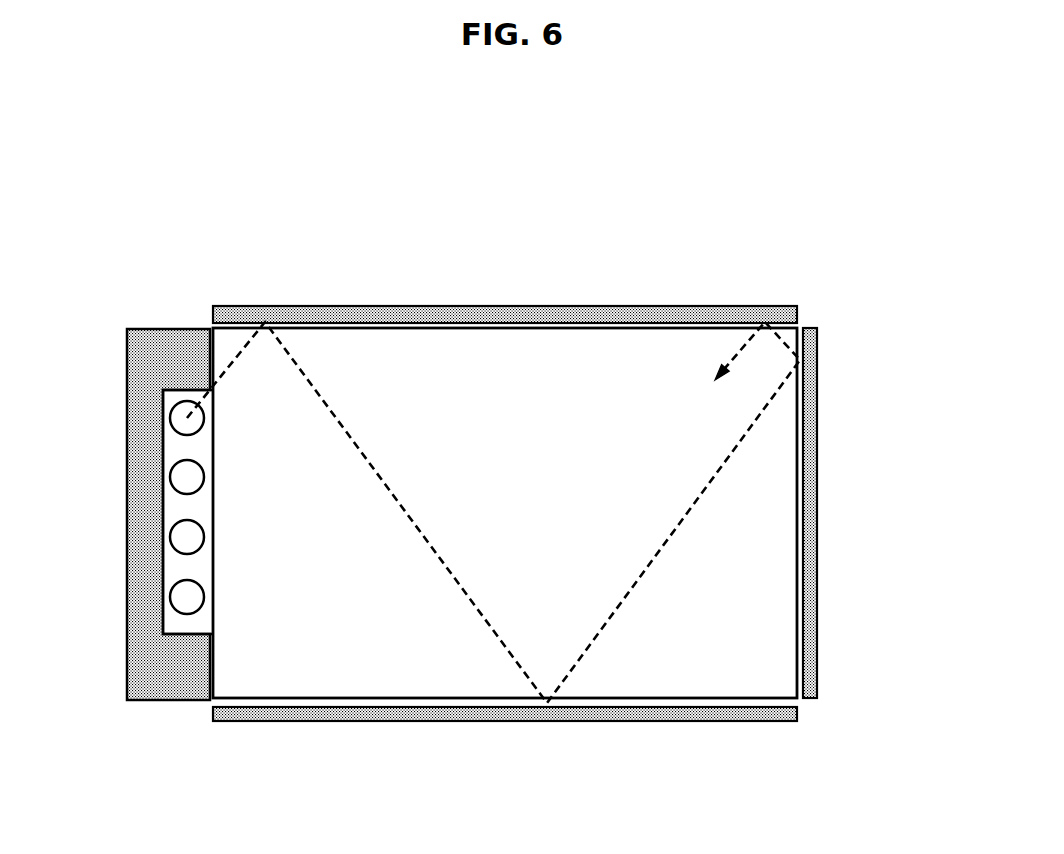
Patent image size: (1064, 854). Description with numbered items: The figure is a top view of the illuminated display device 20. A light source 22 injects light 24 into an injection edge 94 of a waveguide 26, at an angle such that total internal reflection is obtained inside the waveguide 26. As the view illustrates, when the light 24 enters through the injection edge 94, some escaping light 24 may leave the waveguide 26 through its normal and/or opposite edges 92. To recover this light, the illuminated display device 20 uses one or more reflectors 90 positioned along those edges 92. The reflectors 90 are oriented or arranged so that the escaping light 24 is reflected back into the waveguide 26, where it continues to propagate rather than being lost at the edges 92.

The illuminated display device 20 is at (962, 142).
The light source 22 is at (170, 417).
The light 24 is at (772, 400).
The waveguide 26 is at (505, 513).
The reflectors 90 is at (140, 357).
The edges 92 is at (382, 328).
The injection edge 94 is at (213, 670).